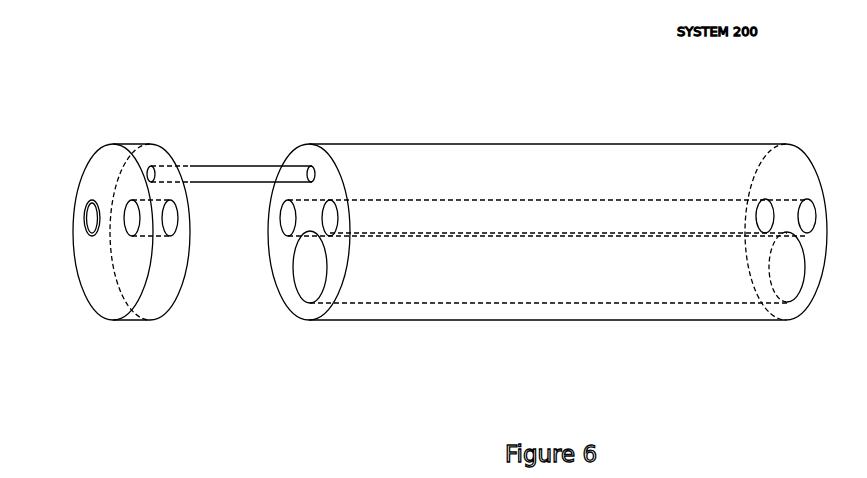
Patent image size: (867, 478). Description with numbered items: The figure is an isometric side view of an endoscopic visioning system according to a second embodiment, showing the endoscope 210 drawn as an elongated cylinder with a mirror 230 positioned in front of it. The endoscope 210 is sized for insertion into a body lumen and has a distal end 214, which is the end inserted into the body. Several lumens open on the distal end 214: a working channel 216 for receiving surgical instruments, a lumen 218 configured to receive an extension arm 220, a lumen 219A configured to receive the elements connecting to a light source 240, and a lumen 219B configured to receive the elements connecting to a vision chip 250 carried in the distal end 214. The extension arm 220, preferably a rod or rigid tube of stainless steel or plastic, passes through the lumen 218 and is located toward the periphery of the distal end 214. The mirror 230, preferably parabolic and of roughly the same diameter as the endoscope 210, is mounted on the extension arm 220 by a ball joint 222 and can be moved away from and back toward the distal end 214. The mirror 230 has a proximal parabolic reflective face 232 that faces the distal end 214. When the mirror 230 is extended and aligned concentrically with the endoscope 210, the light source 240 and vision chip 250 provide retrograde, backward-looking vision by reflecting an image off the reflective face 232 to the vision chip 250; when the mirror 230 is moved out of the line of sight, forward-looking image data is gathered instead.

The endoscope 210 is at (577, 143).
The distal end 214 is at (317, 143).
The working channel 216 is at (325, 300).
The lumen 218 is at (318, 175).
The lumen 219A is at (285, 203).
The lumen 219B is at (330, 205).
The extension arm 220 is at (233, 164).
The ball joint 222 is at (168, 170).
The mirror 230 is at (135, 143).
The parabolic reflective face 232 is at (183, 293).
The light source 240 is at (298, 221).
The vision chip 250 is at (333, 232).